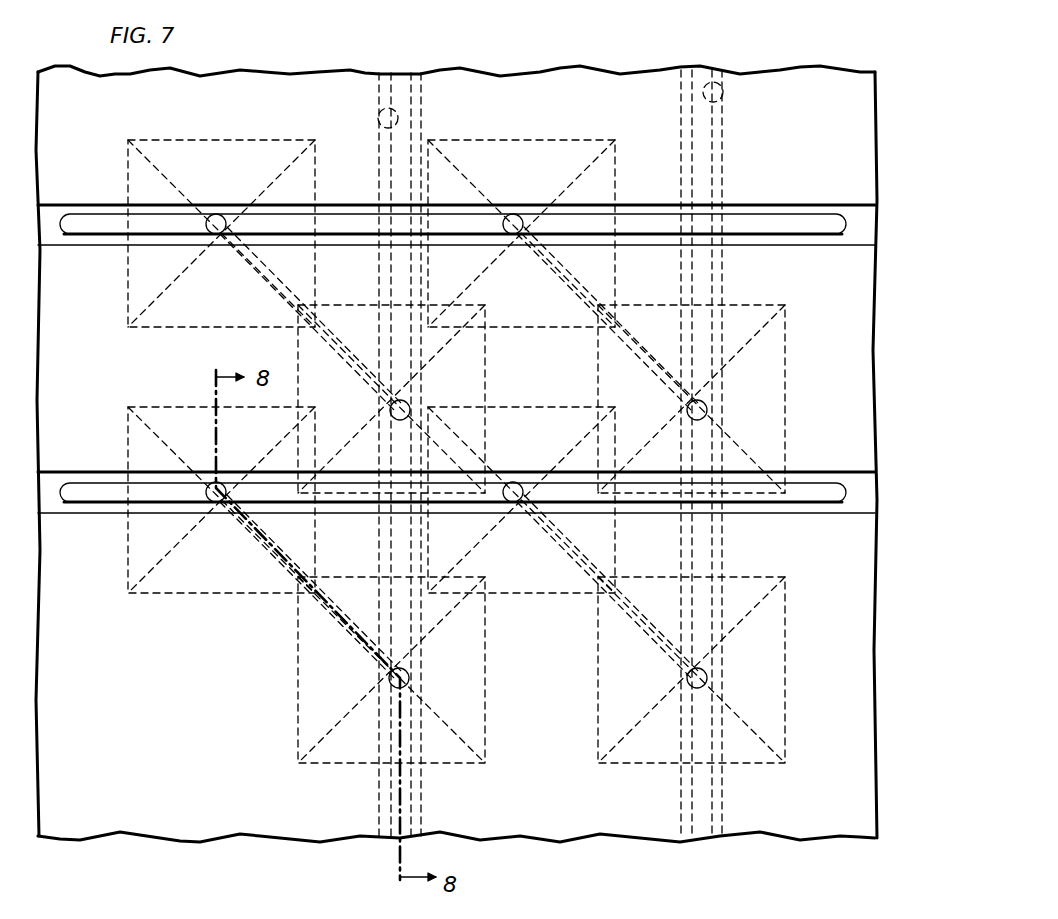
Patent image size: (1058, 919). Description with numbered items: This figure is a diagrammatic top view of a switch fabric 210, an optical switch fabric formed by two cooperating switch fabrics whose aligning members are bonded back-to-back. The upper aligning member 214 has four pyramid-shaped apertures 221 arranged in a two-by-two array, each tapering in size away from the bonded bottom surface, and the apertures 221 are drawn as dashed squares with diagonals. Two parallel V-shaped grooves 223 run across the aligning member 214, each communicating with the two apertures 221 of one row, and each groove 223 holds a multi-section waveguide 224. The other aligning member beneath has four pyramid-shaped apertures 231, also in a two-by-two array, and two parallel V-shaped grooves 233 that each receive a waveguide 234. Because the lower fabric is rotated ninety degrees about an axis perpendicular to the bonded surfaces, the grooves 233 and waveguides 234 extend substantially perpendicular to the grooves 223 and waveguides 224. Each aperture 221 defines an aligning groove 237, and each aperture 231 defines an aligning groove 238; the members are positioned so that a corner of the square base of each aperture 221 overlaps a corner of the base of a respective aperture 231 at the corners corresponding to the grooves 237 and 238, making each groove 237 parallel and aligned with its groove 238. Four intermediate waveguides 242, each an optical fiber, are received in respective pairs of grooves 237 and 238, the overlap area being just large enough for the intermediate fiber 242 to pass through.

The switch fabric 210 is at (630, 50).
The aligning member 214 is at (318, 71).
The pyramid-shaped aperture 221 is at (222, 140).
The V-shaped groove 223 is at (856, 207).
The waveguide 224 is at (770, 213).
The pyramid-shaped aperture 231 is at (350, 305).
The V-shaped groove 233 is at (378, 118).
The waveguide 234 is at (394, 185).
The aligning groove 237 is at (242, 250).
The aligning groove 238 is at (365, 378).
The intermediate waveguide 242 is at (276, 302).